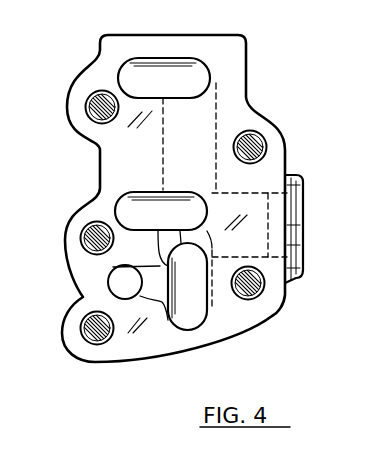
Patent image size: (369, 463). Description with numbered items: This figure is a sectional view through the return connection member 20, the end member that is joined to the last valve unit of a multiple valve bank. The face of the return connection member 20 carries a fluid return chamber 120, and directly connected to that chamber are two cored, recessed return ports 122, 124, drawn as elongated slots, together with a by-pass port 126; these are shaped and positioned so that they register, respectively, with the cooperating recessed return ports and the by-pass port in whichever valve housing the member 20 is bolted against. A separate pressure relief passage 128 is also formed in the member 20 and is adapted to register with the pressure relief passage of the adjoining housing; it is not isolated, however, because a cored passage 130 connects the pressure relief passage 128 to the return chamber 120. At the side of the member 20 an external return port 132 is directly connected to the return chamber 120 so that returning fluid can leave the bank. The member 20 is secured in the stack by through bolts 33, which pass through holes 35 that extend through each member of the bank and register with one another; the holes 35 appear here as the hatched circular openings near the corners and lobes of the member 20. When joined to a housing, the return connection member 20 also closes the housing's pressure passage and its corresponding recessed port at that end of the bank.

The return connection member 20 is at (293, 65).
The through bolts 33 is at (87, 113).
The holes 35 is at (90, 101).
The fluid return chamber 120 is at (163, 147).
The recessed return port 122 is at (188, 62).
The recessed return port 124 is at (120, 198).
The by-pass port 126 is at (191, 330).
The pressure relief passage 128 is at (108, 285).
The cored passage 130 is at (147, 267).
The external return port 132 is at (304, 206).